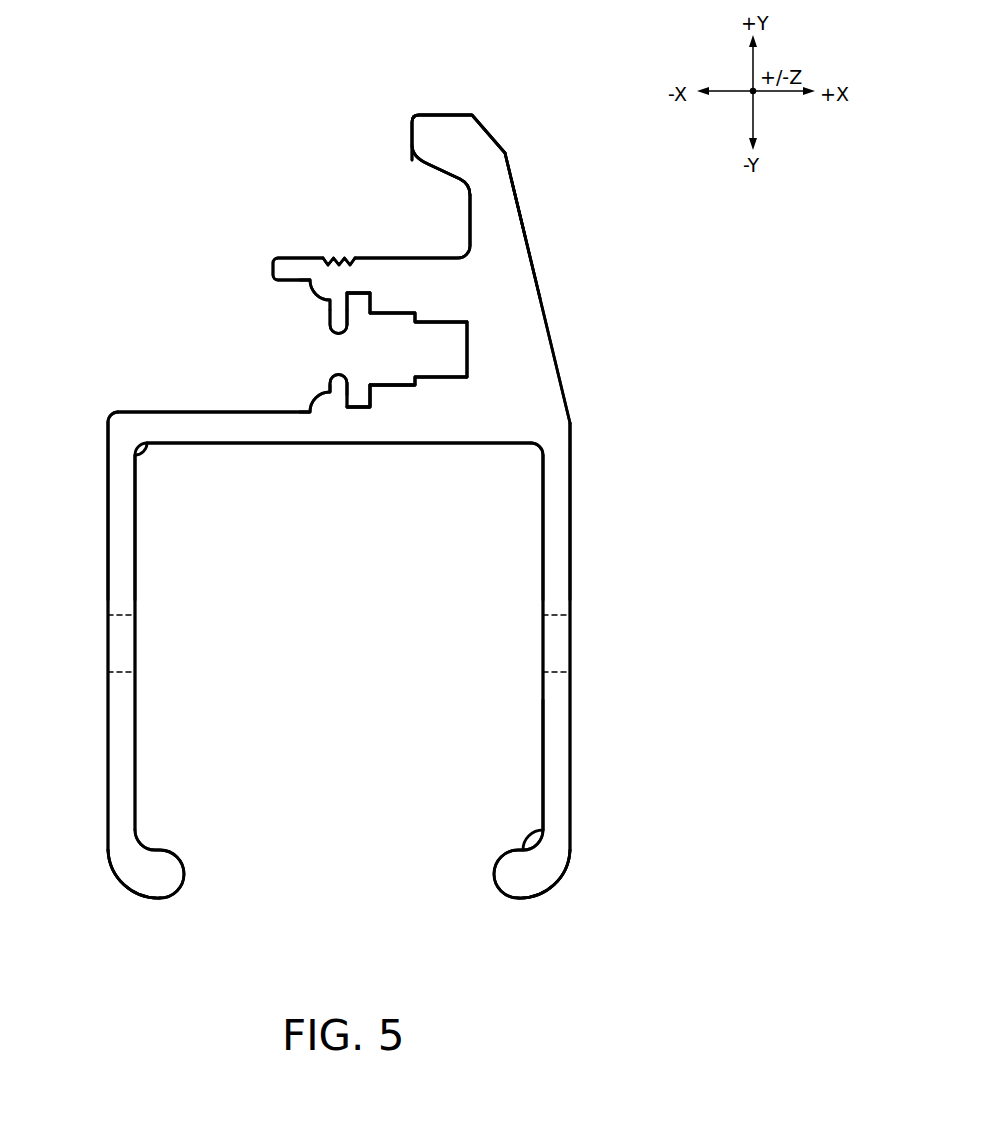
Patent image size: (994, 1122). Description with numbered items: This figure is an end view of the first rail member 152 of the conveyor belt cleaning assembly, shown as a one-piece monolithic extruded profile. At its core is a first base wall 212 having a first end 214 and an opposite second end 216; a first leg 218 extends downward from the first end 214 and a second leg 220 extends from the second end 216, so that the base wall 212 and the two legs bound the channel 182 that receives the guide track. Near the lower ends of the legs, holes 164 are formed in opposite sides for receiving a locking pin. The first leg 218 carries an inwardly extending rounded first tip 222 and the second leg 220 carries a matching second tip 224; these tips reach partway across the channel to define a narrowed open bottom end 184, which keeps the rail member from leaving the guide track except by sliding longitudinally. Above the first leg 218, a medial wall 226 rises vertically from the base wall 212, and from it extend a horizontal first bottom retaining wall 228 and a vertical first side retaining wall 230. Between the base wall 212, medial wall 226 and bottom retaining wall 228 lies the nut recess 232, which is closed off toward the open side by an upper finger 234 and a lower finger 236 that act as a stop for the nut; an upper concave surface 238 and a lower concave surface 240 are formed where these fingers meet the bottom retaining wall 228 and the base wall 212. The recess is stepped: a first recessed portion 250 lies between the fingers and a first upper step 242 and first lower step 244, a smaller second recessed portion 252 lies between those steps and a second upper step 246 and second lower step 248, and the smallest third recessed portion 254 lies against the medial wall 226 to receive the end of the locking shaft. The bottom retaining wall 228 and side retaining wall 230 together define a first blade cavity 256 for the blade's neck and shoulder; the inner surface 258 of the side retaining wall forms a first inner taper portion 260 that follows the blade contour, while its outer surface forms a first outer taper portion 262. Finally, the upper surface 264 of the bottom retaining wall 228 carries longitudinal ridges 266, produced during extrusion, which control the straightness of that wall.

The first rail member 152 is at (686, 431).
The holes 164 is at (559, 617).
The channel 182 is at (534, 786).
The open bottom end 184 is at (421, 900).
The first base wall 212 is at (190, 422).
The first end 214 is at (570, 455).
The second end 216 is at (137, 447).
The first leg 218 is at (570, 713).
The second leg 220 is at (110, 727).
The first tip 222 is at (497, 876).
The second tip 224 is at (183, 876).
The medial wall 226 is at (549, 335).
The first bottom retaining wall 228 is at (427, 243).
The first side retaining wall 230 is at (523, 231).
The nut recess 232 is at (459, 336).
The upper finger 234 is at (330, 318).
The lower finger 236 is at (330, 384).
The upper concave surface 238 is at (320, 296).
The lower concave surface 240 is at (322, 406).
The first upper step 242 is at (397, 313).
The first lower step 244 is at (389, 386).
The second upper step 246 is at (430, 322).
The second lower step 248 is at (448, 378).
The first recessed portion 250 is at (352, 322).
The second recessed portion 252 is at (364, 382).
The third recessed portion 254 is at (452, 365).
The first blade cavity 256 is at (318, 178).
The inner surface 258 is at (412, 137).
The first inner taper portion 260 is at (432, 175).
The first outer taper portion 262 is at (516, 185).
The upper surface 264 is at (284, 257).
The ridges 266 is at (346, 257).